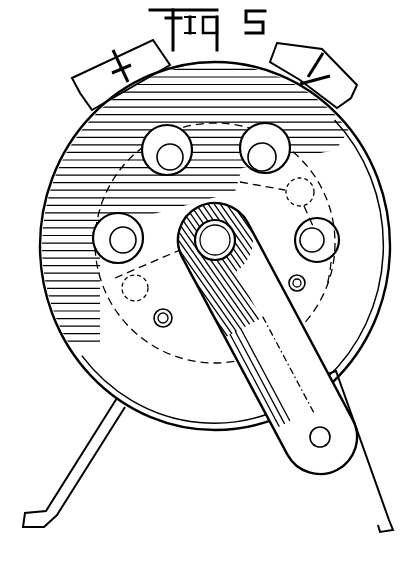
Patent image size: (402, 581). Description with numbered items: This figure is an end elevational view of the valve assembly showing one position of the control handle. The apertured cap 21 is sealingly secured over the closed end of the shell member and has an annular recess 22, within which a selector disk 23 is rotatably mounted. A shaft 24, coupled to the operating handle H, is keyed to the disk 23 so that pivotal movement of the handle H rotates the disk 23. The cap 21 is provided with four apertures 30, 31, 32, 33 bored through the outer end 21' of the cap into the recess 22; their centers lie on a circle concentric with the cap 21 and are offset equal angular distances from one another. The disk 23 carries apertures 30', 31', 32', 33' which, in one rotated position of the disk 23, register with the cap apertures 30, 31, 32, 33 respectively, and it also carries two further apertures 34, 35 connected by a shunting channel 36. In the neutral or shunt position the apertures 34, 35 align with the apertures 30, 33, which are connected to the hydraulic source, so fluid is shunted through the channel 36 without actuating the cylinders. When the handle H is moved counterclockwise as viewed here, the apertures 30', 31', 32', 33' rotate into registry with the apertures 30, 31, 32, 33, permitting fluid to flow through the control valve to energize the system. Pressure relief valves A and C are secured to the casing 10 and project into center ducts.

The casing 10 is at (371, 149).
The apertured cap 21 is at (208, 326).
The outer end of cap 21' is at (215, 205).
The annular recess 22 is at (318, 290).
The selector disk 23 is at (322, 272).
The shaft 24 is at (221, 246).
The cap aperture 30 is at (83, 206).
The disk aperture 30' is at (144, 239).
The cap aperture 31 is at (173, 106).
The disk aperture 31' is at (177, 177).
The cap aperture 32 is at (263, 105).
The disk aperture 32' is at (254, 173).
The cap aperture 33 is at (337, 235).
The disk aperture 33' is at (295, 239).
The shunt aperture 34 is at (128, 300).
The shunt aperture 35 is at (304, 193).
The shunting channel 36 is at (171, 280).
The pressure relief valve A is at (346, 66).
The pressure relief valve C is at (95, 63).
The operating handle H is at (266, 380).